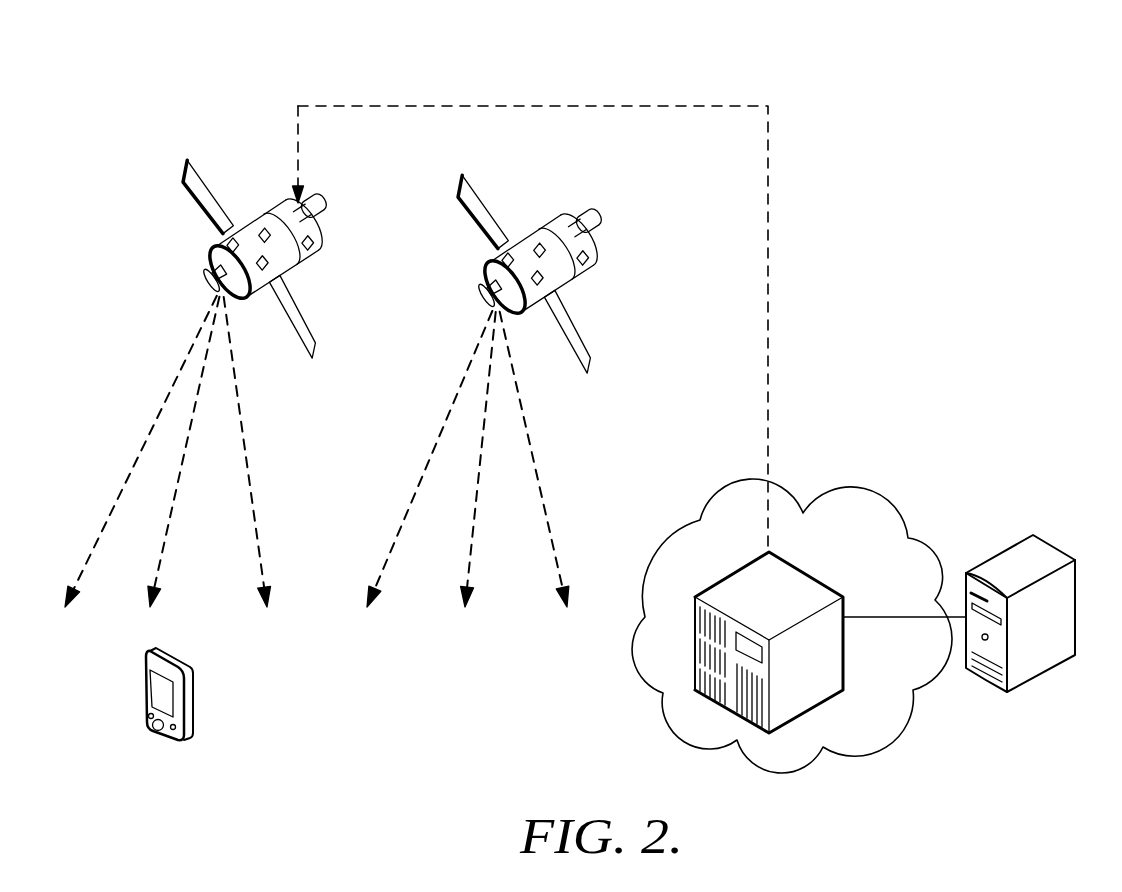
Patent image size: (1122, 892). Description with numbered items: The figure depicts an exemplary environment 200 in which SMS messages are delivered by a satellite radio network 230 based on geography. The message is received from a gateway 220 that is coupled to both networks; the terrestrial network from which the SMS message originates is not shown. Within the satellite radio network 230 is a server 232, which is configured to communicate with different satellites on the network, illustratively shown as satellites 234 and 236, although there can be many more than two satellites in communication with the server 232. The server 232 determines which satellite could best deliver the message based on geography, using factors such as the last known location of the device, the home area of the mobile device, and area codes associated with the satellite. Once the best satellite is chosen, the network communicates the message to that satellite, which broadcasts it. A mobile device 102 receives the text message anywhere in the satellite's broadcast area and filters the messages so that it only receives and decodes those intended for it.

The exemplary environment 200 is at (52, 56).
The satellite 236 is at (327, 205).
The satellite 234 is at (602, 220).
The satellite radio network 230 is at (865, 491).
The server 232 is at (806, 572).
The gateway 220 is at (1057, 549).
The mobile device 102 is at (173, 657).